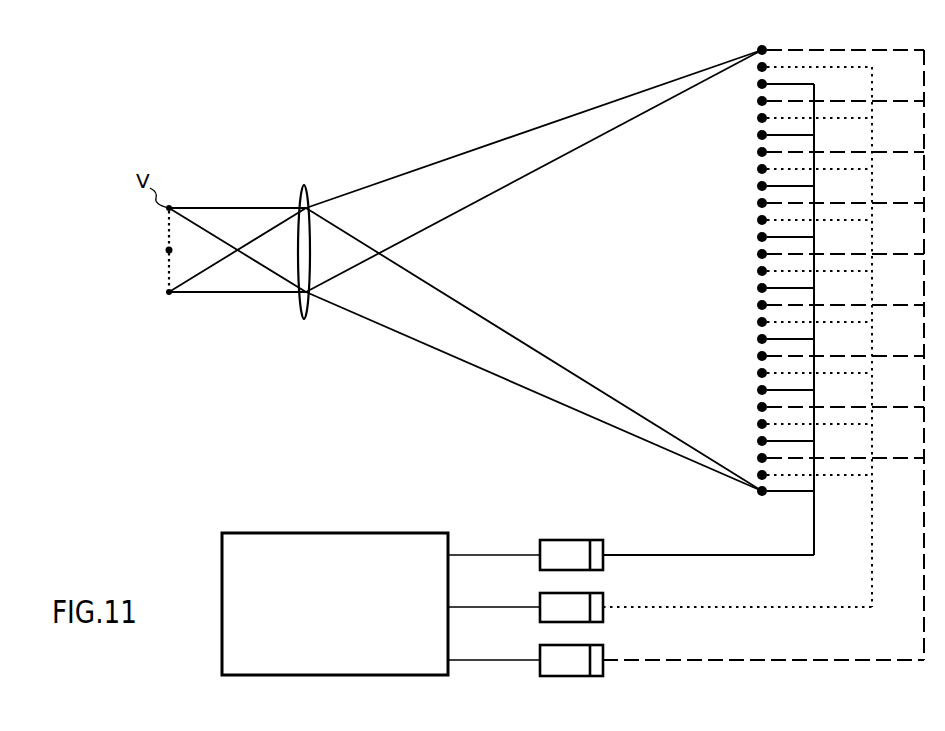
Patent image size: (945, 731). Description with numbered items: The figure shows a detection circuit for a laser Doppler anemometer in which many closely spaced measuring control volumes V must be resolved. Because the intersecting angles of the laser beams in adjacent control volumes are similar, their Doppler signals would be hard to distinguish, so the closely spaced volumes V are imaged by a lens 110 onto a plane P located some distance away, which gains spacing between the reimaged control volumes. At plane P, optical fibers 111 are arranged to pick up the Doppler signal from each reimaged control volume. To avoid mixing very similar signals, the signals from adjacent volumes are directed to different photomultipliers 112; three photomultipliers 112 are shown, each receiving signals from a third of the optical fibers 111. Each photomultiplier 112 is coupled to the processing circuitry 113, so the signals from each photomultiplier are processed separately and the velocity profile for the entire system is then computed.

The lens 110 is at (306, 188).
The optical fibers 111 is at (762, 50).
The photomultipliers 112 is at (603, 568).
The processing circuitry 113 is at (448, 540).